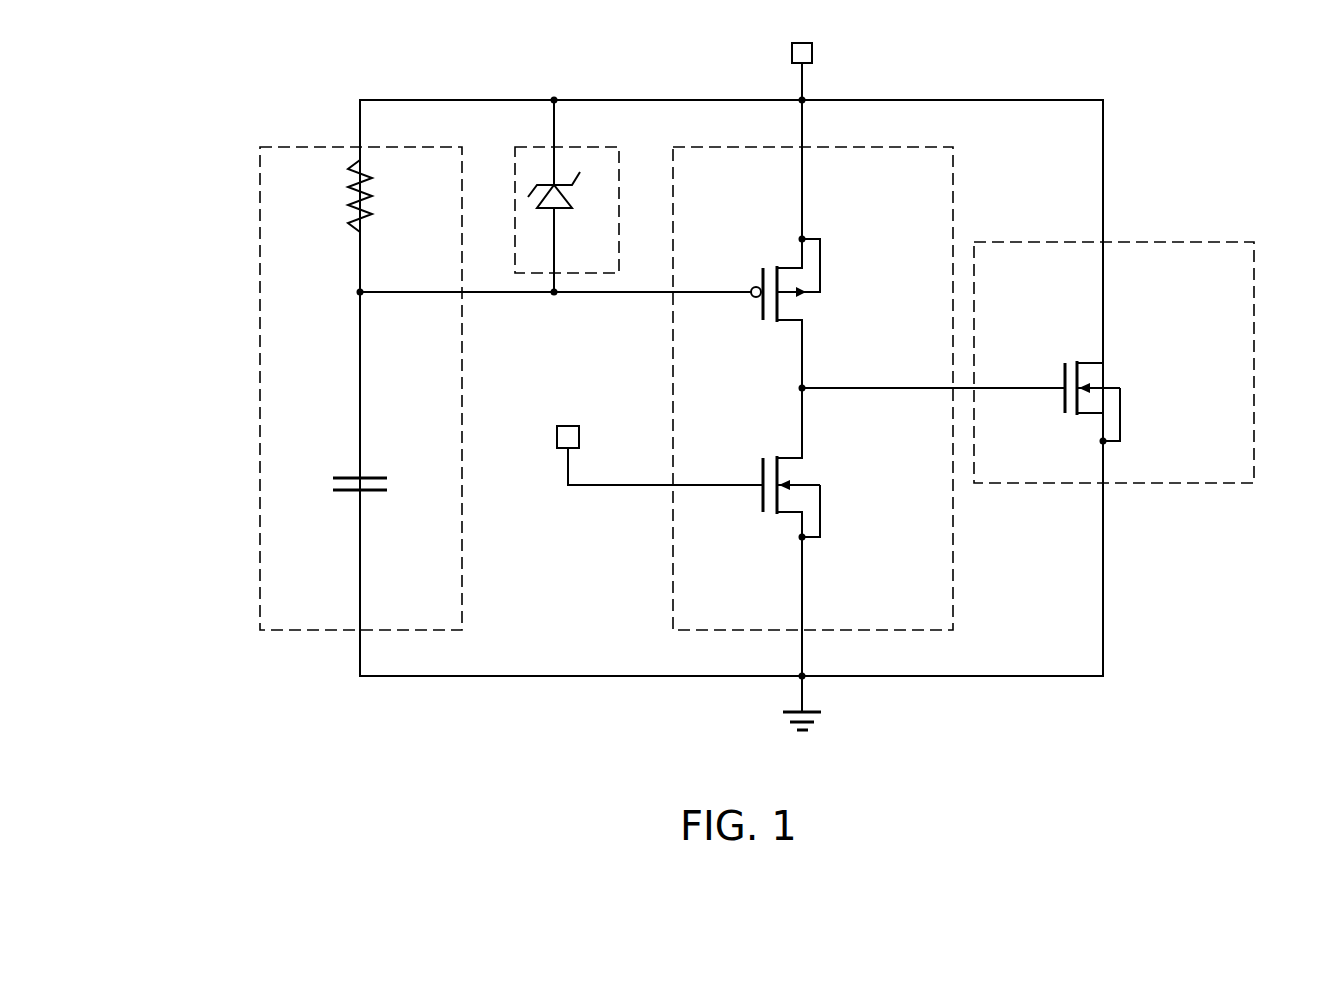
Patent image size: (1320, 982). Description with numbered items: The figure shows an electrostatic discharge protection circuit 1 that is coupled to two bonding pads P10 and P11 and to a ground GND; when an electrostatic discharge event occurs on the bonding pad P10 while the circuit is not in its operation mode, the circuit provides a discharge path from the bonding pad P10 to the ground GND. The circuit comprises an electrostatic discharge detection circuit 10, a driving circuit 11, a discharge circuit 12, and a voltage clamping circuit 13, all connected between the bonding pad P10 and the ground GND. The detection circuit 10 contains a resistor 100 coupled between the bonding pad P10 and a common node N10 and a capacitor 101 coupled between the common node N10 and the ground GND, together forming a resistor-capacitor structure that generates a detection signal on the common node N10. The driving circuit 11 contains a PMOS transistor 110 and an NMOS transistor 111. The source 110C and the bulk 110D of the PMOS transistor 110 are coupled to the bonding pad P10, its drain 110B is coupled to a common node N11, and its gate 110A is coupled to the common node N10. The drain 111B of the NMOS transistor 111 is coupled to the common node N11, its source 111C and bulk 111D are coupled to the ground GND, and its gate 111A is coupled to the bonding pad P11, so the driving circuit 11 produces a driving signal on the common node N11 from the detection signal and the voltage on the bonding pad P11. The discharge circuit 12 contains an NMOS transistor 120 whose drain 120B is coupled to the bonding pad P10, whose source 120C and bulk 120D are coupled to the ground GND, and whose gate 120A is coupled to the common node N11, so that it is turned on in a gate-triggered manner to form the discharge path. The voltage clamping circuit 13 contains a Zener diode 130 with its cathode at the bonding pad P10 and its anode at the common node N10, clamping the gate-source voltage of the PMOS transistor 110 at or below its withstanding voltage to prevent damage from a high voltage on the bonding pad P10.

The electrostatic discharge protection circuit 1 is at (168, 62).
The electrostatic discharge detection circuit 10 is at (265, 147).
The resistor 100 is at (374, 189).
The capacitor 101 is at (378, 476).
The voltage clamping circuit 13 is at (589, 147).
The Zener diode 130 is at (560, 210).
The driving circuit 11 is at (675, 147).
The P-type metal-oxide-semiconductor transistor 110 is at (834, 226).
The gate 110A is at (740, 300).
The drain 110B is at (797, 330).
The source 110C is at (800, 256).
The bulk 110D is at (804, 297).
The N-type metal-oxide-semiconductor transistor 111 is at (836, 554).
The gate 111A is at (740, 490).
The drain 111B is at (800, 449).
The source 111C is at (797, 522).
The bulk 111D is at (805, 482).
The discharge circuit 12 is at (975, 242).
The NMOS transistor 120 is at (1136, 322).
The gate 120A is at (1040, 392).
The drain 120B is at (1100, 352).
The source 120C is at (1098, 426).
The bulk 120D is at (1105, 386).
The common node N10 is at (357, 292).
The common node N11 is at (808, 386).
The bonding pad P10 is at (814, 53).
The bonding pad P11 is at (566, 424).
The ground GND is at (798, 740).